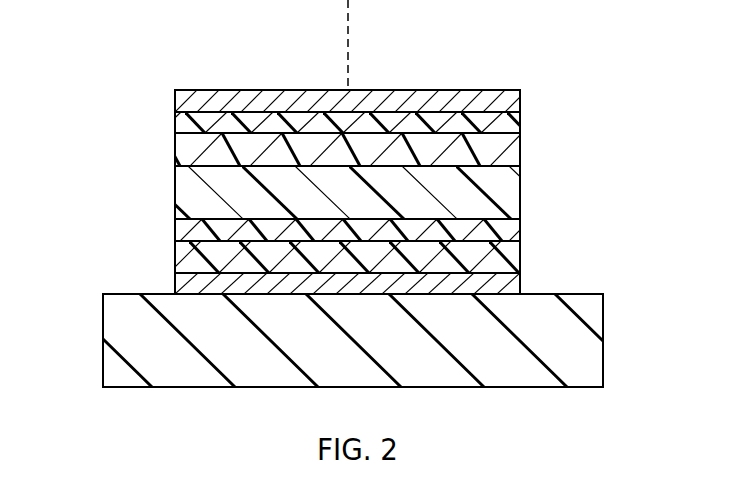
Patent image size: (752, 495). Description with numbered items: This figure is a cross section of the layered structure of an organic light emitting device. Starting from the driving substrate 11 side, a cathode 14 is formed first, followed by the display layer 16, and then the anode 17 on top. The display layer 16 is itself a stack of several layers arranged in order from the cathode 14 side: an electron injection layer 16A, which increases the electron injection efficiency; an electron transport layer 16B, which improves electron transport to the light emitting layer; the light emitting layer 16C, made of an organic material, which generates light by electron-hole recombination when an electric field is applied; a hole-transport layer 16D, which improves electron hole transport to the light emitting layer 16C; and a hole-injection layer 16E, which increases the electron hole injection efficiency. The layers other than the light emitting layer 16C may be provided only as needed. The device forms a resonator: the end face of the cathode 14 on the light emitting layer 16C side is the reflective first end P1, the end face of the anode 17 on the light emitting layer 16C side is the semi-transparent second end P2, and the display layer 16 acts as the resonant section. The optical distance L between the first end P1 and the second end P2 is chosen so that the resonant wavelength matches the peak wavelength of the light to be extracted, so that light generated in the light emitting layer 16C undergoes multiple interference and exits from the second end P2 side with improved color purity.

The driving substrate 11 is at (593, 345).
The cathode 14 is at (521, 288).
The display layer 16 is at (409, 192).
The electron injection layer 16A is at (514, 258).
The electron transport layer 16B is at (514, 232).
The light emitting layer 16C is at (512, 192).
The hole-transport layer 16D is at (514, 153).
The hole-injection layer 16E is at (383, 124).
The anode 17 is at (514, 100).
The first end P1 is at (209, 276).
The second end P2 is at (212, 110).
The optical distance L is at (175, 273).